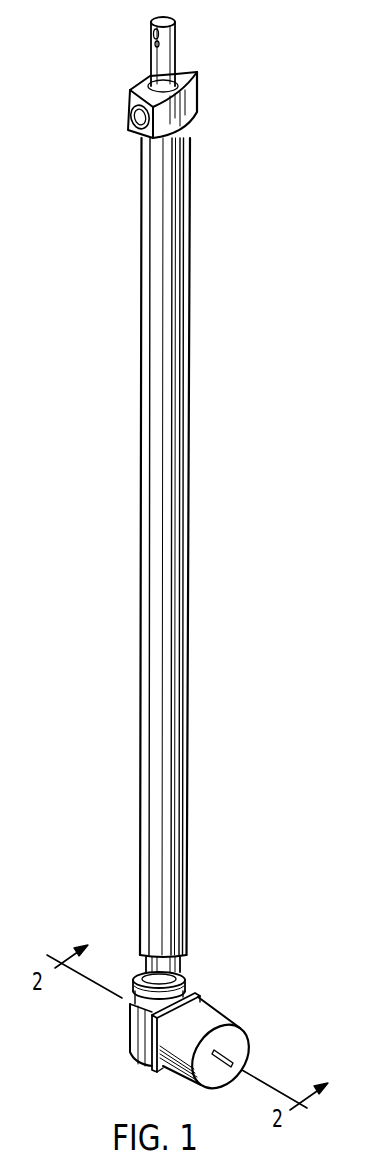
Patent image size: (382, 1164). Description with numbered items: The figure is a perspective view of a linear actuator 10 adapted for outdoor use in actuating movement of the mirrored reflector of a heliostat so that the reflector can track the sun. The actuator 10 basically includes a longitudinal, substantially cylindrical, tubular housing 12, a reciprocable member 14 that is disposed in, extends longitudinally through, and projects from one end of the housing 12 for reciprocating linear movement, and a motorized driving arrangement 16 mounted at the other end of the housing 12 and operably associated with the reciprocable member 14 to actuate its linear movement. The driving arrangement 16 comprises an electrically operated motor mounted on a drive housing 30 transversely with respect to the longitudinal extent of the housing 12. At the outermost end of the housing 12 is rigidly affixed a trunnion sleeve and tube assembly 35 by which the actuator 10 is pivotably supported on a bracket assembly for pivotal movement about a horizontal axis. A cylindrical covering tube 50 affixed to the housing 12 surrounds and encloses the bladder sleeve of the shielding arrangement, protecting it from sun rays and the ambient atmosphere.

The linear actuator 10 is at (108, 801).
The tubular housing 12 is at (187, 958).
The reciprocable member 14 is at (176, 35).
The motorized driving arrangement 16 is at (228, 999).
The drive housing 30 is at (131, 1029).
The trunnion sleeve and tube assembly 35 is at (197, 98).
The covering tube 50 is at (187, 502).